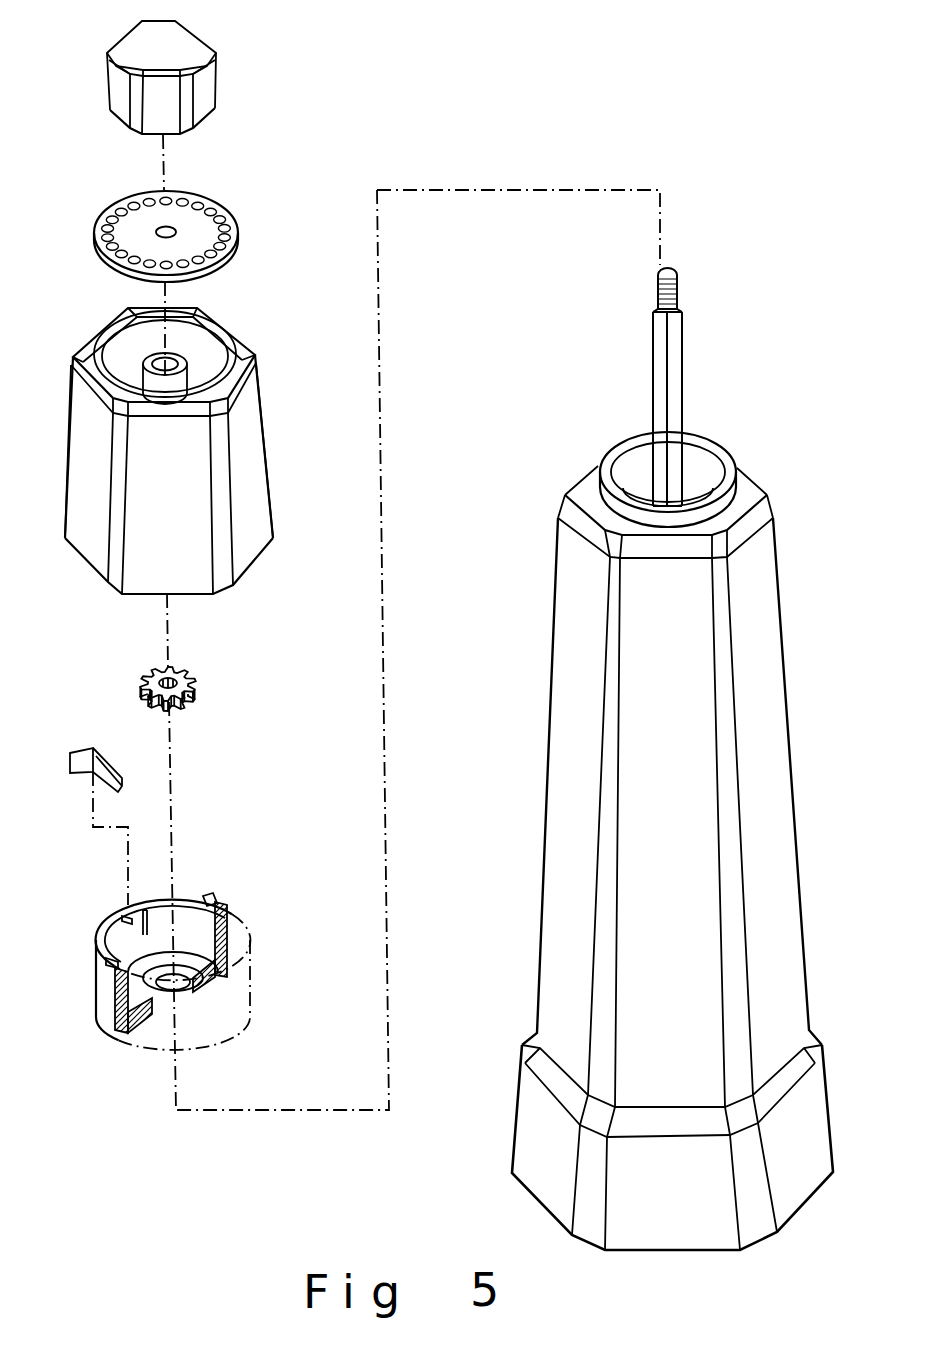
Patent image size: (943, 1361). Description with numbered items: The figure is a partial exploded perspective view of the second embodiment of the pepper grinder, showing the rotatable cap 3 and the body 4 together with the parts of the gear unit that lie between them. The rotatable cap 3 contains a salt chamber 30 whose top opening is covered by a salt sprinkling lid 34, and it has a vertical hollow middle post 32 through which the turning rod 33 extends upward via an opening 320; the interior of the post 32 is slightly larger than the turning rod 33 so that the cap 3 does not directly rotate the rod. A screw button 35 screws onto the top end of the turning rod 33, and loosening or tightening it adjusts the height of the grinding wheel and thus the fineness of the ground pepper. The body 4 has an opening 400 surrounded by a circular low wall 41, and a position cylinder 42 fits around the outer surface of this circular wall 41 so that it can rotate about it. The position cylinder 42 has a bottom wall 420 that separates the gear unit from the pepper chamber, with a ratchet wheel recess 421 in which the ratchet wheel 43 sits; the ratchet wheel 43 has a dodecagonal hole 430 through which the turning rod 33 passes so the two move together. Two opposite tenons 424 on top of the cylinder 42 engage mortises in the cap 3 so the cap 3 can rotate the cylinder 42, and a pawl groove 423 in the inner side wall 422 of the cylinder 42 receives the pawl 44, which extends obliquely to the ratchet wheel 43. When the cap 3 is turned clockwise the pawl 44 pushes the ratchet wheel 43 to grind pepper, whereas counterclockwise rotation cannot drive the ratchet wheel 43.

The rotatable cap 3 is at (199, 421).
The salt chamber 30 is at (205, 363).
The hollow middle post 32 is at (188, 380).
The opening 320 is at (178, 358).
The turning rod 33 is at (662, 392).
The salt sprinkling lid 34 is at (207, 233).
The screw button 35 is at (220, 75).
The body 4 is at (672, 816).
The opening 400 is at (692, 488).
The circular low wall 41 is at (722, 500).
The position cylinder 42 is at (188, 925).
The bottom wall 420 is at (210, 940).
The ratchet wheel recess 421 is at (210, 987).
The inner side wall 422 is at (127, 950).
The pawl groove 423 is at (122, 920).
The tenon 424 is at (108, 963).
The ratchet wheel 43 is at (199, 663).
The dodecagonal hole 430 is at (172, 668).
The pawl 44 is at (80, 748).